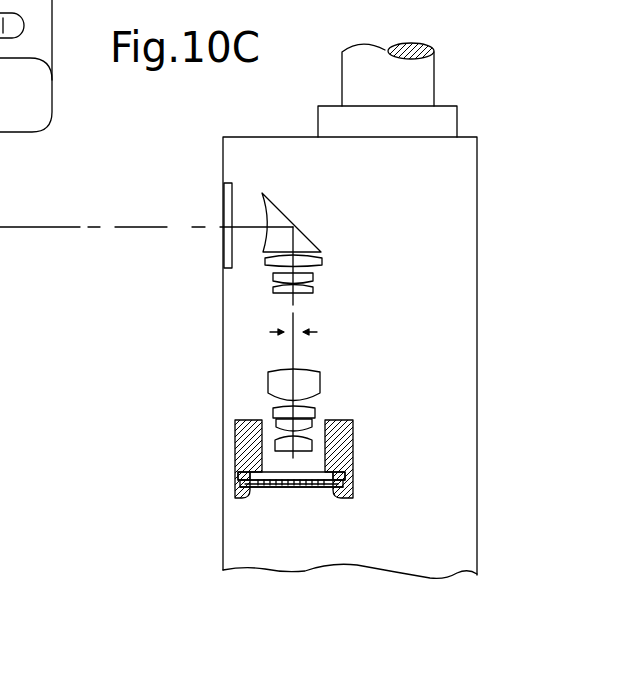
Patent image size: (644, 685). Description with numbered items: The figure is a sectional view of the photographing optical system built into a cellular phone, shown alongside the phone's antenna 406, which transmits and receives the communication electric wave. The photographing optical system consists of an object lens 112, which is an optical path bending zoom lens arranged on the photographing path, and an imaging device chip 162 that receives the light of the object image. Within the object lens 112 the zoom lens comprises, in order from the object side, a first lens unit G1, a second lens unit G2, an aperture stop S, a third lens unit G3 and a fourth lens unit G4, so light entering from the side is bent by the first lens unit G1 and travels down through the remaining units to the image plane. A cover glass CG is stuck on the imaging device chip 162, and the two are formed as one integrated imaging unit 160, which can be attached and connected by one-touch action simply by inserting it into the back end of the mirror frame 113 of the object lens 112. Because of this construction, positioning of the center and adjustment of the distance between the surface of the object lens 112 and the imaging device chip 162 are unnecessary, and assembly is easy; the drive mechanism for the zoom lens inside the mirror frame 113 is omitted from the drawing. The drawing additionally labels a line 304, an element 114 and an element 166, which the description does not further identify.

The antenna 406 is at (420, 77).
The optical path / incident light axis 304 is at (49, 226).
The entrance window 114 is at (227, 197).
The first lens unit G1 is at (333, 260).
The second lens unit G2 is at (318, 272).
The object lens 112 is at (240, 332).
The aperture stop S is at (275, 334).
The third lens unit G3 is at (326, 396).
The fourth lens unit G4 is at (316, 456).
The cover glass CG is at (277, 464).
The mirror frame 113 is at (353, 446).
The imaging device chip 162 is at (283, 487).
The sensor substrate 166 is at (327, 487).
The imaging unit 160 is at (291, 490).